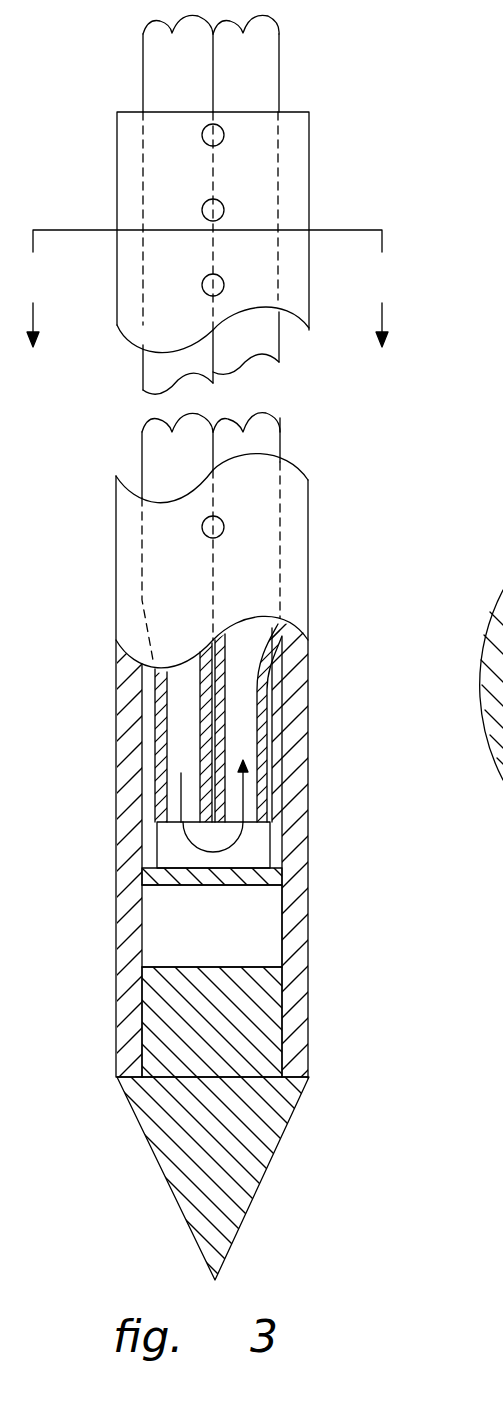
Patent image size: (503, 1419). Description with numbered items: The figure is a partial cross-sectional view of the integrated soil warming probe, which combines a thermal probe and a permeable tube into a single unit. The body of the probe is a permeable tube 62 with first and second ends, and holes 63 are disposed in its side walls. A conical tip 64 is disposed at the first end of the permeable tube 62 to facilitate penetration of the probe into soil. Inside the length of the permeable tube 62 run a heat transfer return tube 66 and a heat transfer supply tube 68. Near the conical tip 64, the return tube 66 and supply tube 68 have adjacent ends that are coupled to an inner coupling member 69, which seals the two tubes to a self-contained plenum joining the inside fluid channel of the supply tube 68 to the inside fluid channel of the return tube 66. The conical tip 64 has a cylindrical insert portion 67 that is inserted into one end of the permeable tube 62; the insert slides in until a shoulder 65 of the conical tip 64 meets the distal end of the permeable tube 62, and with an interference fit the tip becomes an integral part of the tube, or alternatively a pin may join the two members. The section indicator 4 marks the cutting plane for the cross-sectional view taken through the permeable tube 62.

The permeable tube 62 is at (310, 157).
The holes 63 is at (203, 133).
The conical tip 64 is at (137, 1113).
The shoulder 65 is at (310, 1055).
The heat transfer return tube 66 is at (272, 88).
The cylindrical insert portion 67 is at (262, 960).
The heat transfer supply tube 68 is at (155, 82).
The inner coupling member 69 is at (265, 877).
The section line 4- 4 is at (207, 288).